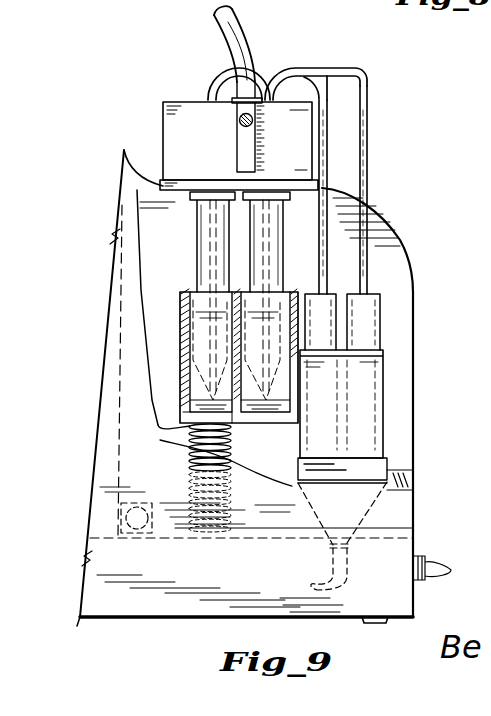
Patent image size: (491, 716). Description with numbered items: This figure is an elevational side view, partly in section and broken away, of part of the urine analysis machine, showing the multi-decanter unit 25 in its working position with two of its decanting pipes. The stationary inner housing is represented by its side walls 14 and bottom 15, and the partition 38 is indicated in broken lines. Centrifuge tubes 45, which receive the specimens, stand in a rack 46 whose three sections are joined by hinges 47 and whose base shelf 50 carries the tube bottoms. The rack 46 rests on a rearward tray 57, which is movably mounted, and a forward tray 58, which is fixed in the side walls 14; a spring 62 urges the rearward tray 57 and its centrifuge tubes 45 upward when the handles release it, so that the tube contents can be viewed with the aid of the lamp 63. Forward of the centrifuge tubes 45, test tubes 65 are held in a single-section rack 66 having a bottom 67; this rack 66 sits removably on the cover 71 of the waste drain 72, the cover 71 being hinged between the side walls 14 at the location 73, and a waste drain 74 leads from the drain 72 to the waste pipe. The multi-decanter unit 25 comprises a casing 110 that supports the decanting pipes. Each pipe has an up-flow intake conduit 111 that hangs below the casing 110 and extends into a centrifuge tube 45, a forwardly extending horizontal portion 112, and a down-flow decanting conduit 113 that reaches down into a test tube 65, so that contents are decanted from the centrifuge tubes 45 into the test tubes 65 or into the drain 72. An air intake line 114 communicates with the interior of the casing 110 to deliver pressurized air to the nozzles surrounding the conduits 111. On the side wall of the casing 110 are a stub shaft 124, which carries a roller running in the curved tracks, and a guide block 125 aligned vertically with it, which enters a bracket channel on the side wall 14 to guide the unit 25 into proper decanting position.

The side walls 14 is at (388, 238).
The bottom 15 is at (168, 618).
The multi-decanter unit 25 is at (170, 100).
The partition wall 38 is at (117, 367).
The centrifuge tubes 45 is at (197, 255).
The racks 46 is at (180, 331).
The hinges 47 is at (178, 310).
The base shelf 50 is at (195, 400).
The rearward tray 57 is at (166, 435).
The forward tray 58 is at (258, 424).
The spring 62 is at (228, 454).
The lamp 63 is at (118, 503).
The test tubes 65 is at (360, 300).
The rack 66 is at (386, 407).
The bottom 67 is at (378, 462).
The cover 71 is at (353, 478).
The waste drain 72 is at (412, 540).
The hinge mounting 73 is at (393, 477).
The waste drain 74 is at (345, 590).
The casing 110 is at (172, 150).
The up-flow intake conduit 111 is at (210, 227).
The horizontal portion 112 is at (325, 72).
The down-flow decanting conduit 113 is at (368, 158).
The air intake line 114 is at (241, 28).
The stub shafts 124 is at (238, 121).
The guide blocks 125 is at (258, 138).